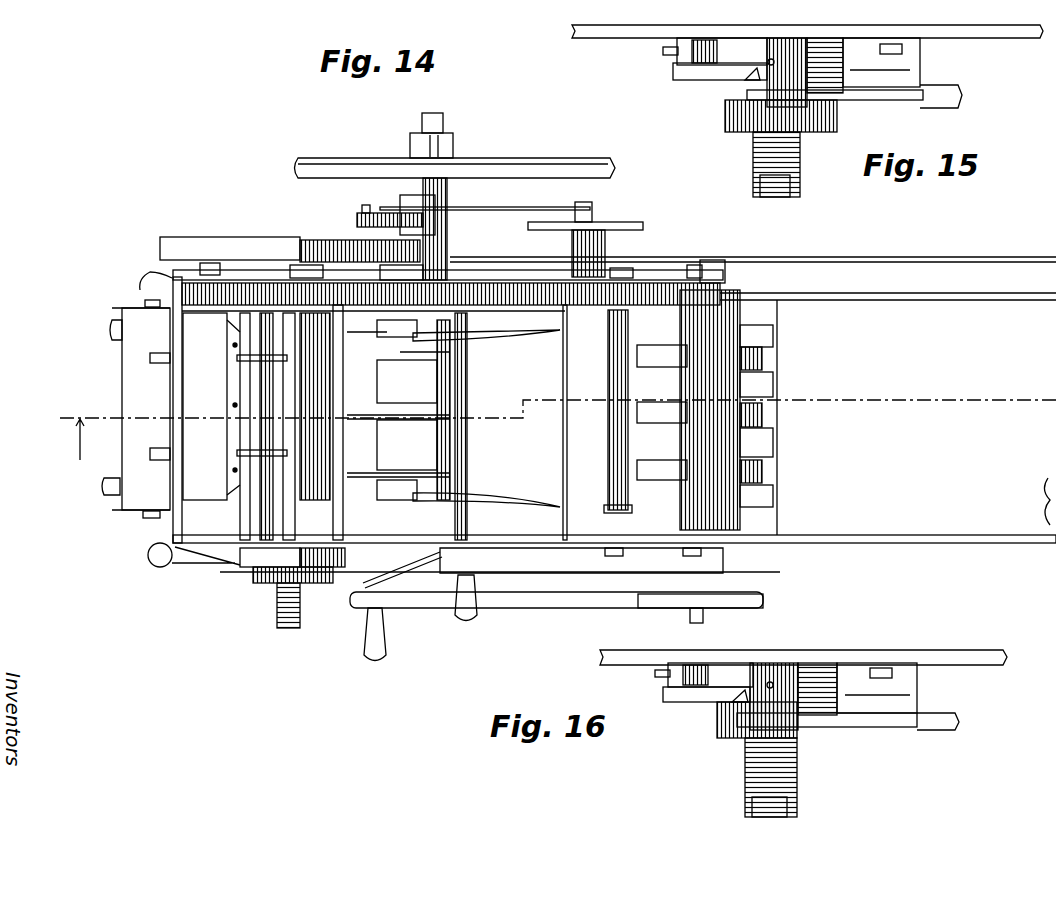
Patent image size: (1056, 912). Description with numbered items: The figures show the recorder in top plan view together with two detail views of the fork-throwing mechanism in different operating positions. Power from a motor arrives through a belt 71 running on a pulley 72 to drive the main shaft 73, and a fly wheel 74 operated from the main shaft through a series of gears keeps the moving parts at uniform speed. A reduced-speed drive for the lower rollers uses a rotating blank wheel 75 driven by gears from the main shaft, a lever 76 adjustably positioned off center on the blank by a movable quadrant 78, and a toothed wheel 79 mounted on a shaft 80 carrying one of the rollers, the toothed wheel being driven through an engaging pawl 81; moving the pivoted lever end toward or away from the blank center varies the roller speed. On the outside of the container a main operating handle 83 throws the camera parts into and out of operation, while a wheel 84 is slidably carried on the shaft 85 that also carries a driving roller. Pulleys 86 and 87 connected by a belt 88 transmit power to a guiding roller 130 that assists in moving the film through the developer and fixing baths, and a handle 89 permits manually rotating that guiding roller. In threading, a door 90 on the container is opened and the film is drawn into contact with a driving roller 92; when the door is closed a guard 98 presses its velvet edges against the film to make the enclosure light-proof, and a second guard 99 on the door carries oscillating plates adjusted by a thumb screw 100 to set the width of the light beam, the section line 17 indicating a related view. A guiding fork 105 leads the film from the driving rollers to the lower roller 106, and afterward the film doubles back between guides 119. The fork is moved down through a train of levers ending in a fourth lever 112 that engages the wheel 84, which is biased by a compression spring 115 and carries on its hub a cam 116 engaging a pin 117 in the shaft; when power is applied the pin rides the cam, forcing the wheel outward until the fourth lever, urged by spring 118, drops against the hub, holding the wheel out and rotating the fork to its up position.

In FIG. 14, the section line arrow 17 is at (90, 448).
In FIG. 14, the belt 71 is at (535, 168).
In FIG. 14, the pulley 72 is at (480, 162).
In FIG. 14, the main shaft 73 is at (436, 115).
In FIG. 14, the fly wheel 74 is at (252, 240).
In FIG. 14, the blank wheel 75 is at (640, 226).
In FIG. 14, the lever 76 is at (530, 205).
In FIG. 14, the movable quadrant 78 is at (598, 222).
In FIG. 14, the toothed wheel 79 is at (365, 205).
In FIG. 14, the shaft 80 is at (395, 234).
In FIG. 14, the pawl 81 is at (400, 208).
In FIG. 15, the main operating handle 83 is at (943, 96).
In FIG. 16, the main operating handle 83 is at (935, 718).
In FIG. 14, the wheel 84 is at (258, 584).
In FIG. 15, the wheel 84 is at (727, 128).
In FIG. 16, the wheel 84 is at (718, 730).
In FIG. 15, the shaft 85 is at (786, 197).
In FIG. 16, the shaft 85 is at (788, 814).
In FIG. 14, the pulley 86 is at (440, 608).
In FIG. 14, the pulley 87 is at (740, 598).
In FIG. 14, the belt 88 is at (565, 600).
In FIG. 14, the handle 89 is at (385, 655).
In FIG. 14, the door 90 is at (141, 289).
In FIG. 14, the driving roller 92 is at (300, 406).
In FIG. 14, the guard 98 is at (211, 406).
In FIG. 14, the second guard 99 is at (128, 386).
In FIG. 14, the thumb screw 100 is at (110, 497).
In FIG. 14, the guiding fork 105 is at (447, 415).
In FIG. 14, the roller 106 is at (440, 450).
In FIG. 15, the fourth lever 112 is at (878, 98).
In FIG. 16, the fourth lever 112 is at (868, 722).
In FIG. 14, the compression spring 115 is at (277, 605).
In FIG. 15, the compression spring 115 is at (802, 165).
In FIG. 16, the compression spring 115 is at (800, 800).
In FIG. 14, the cam 116 is at (255, 568).
In FIG. 15, the cam 116 is at (755, 78).
In FIG. 16, the cam 116 is at (740, 700).
In FIG. 15, the pin 117 is at (780, 40).
In FIG. 16, the pin 117 is at (778, 665).
In FIG. 14, the spring 118 is at (322, 585).
In FIG. 15, the spring 118 is at (840, 43).
In FIG. 16, the spring 118 is at (850, 668).
In FIG. 14, the guides 119 is at (520, 337).
In FIG. 14, the guiding roller 130 is at (765, 358).